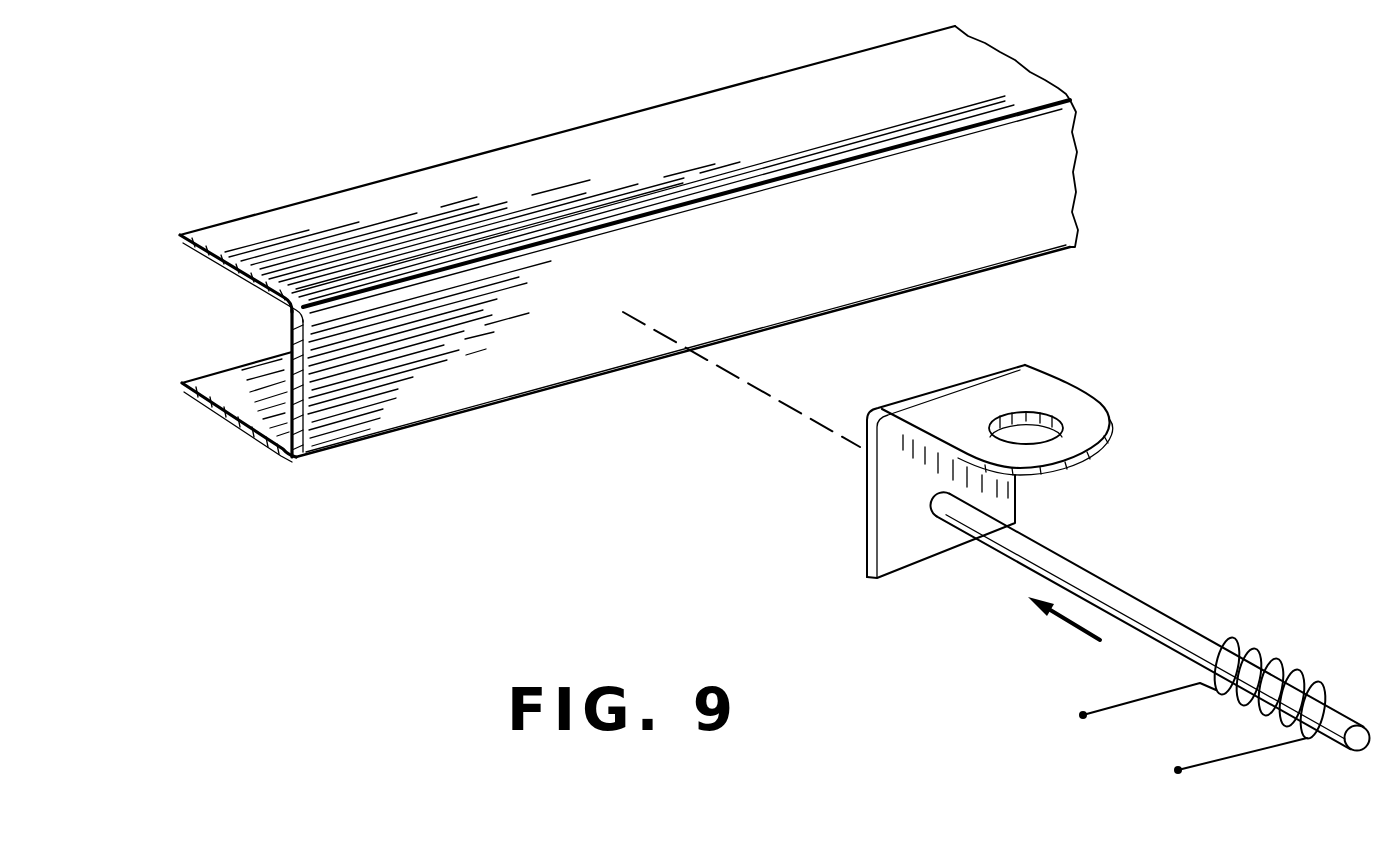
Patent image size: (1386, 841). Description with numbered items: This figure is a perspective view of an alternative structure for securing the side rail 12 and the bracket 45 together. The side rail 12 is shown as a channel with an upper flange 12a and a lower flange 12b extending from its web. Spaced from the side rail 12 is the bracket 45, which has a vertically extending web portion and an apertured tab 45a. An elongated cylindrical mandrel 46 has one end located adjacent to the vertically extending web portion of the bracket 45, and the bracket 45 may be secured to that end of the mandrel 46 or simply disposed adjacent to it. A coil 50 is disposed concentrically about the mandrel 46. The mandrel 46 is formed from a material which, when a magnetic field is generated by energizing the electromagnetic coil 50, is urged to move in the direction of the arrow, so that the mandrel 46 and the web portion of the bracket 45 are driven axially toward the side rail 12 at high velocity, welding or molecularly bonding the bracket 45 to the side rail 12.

The side rail 12 is at (377, 403).
The upper flange of channel 12a is at (296, 223).
The lower flange of channel 12b is at (233, 387).
The bracket 45 is at (880, 523).
The apertured tab of bracket 45a is at (1087, 412).
The mandrel 46 is at (1133, 595).
The coil 50 is at (1257, 647).